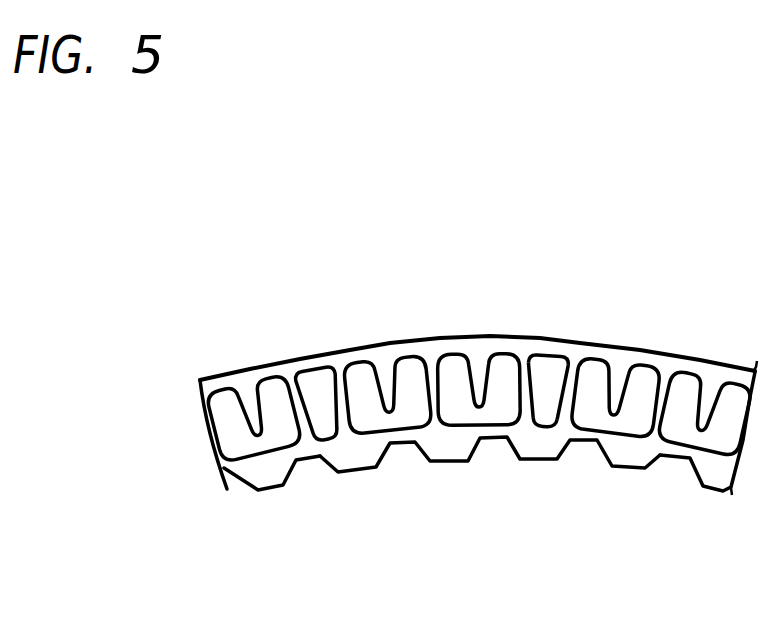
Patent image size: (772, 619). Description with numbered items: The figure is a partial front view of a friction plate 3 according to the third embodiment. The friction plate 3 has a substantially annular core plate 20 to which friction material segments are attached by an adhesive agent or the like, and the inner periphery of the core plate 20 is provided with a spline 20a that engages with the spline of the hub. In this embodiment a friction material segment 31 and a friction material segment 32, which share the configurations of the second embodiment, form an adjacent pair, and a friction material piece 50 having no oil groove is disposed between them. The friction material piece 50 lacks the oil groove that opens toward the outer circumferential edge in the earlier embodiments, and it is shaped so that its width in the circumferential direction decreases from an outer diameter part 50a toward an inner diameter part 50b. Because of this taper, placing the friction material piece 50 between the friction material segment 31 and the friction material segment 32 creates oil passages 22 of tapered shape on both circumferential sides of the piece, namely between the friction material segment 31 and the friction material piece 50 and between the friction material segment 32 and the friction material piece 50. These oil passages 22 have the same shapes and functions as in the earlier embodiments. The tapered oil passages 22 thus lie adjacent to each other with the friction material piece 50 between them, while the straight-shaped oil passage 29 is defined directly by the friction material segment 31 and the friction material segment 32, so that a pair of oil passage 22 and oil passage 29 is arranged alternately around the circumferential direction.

The friction plate 3 is at (474, 370).
The core plate 20 is at (243, 374).
The spline 20a is at (299, 478).
The oil passage 22 is at (525, 415).
The oil passage 29 is at (435, 374).
The friction material segment 31 is at (378, 425).
The friction material segment 32 is at (461, 413).
The friction material piece 50 is at (448, 370).
The outer diameter part 50a is at (548, 362).
The inner diameter part 50b is at (543, 415).